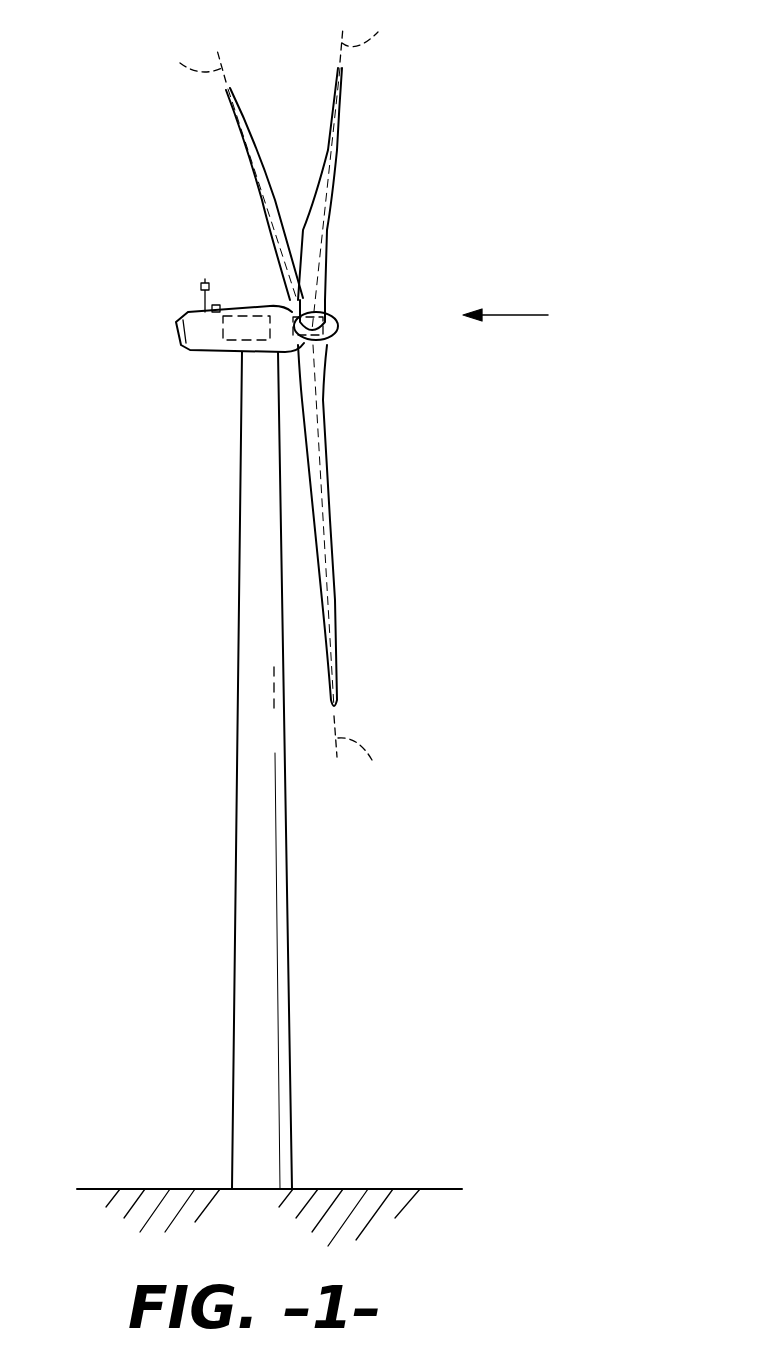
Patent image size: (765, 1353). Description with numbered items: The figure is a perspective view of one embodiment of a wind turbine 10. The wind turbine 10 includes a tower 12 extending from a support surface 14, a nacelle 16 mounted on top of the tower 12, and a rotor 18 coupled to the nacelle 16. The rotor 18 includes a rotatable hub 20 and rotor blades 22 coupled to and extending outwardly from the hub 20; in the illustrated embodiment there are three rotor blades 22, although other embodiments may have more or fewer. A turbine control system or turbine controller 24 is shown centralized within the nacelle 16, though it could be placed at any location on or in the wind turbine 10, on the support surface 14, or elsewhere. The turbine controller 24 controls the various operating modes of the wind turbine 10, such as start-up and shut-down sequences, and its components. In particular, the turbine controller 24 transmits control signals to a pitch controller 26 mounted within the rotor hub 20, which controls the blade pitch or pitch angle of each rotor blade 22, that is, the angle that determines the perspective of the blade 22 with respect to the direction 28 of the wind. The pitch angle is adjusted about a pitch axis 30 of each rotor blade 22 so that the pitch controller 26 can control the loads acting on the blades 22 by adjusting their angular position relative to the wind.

The wind turbine 10 is at (437, 145).
The tower 12 is at (247, 887).
The support surface 14 is at (160, 1188).
The nacelle 16 is at (222, 319).
The rotor 18 is at (292, 400).
The rotatable hub 20 is at (358, 357).
The rotor blade 22 is at (335, 107).
The turbine controller 24 is at (248, 315).
The pitch controller 26 is at (333, 320).
The direction of the wind 28 is at (520, 313).
The pitch axis 30 is at (402, 260).